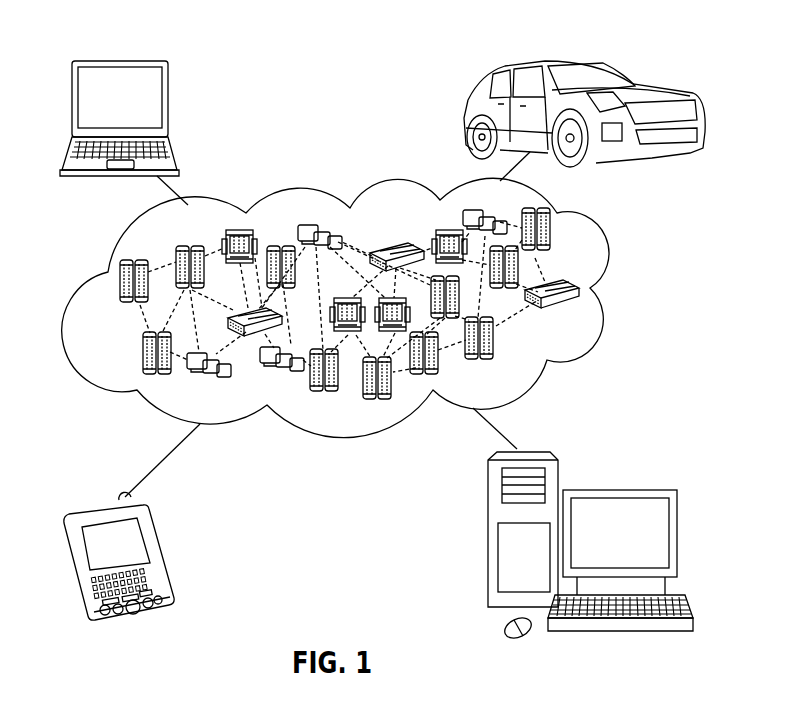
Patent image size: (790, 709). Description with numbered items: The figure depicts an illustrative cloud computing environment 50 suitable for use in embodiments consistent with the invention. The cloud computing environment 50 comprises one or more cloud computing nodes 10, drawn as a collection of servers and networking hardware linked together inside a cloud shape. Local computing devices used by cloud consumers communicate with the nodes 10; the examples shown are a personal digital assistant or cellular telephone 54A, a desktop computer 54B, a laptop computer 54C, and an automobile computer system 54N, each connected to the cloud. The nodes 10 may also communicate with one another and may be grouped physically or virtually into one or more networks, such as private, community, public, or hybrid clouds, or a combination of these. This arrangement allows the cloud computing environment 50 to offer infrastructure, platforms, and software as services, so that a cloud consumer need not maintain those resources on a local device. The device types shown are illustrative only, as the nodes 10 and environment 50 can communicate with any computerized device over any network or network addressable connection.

The cloud computing nodes 10 is at (582, 336).
The cloud computing environment 50 is at (618, 291).
The personal digital assistant (PDA) or cellular telephone 54A is at (160, 555).
The desktop computer 54B is at (618, 486).
The laptop computer 54C is at (167, 103).
The automobile computer system 54N is at (468, 113).